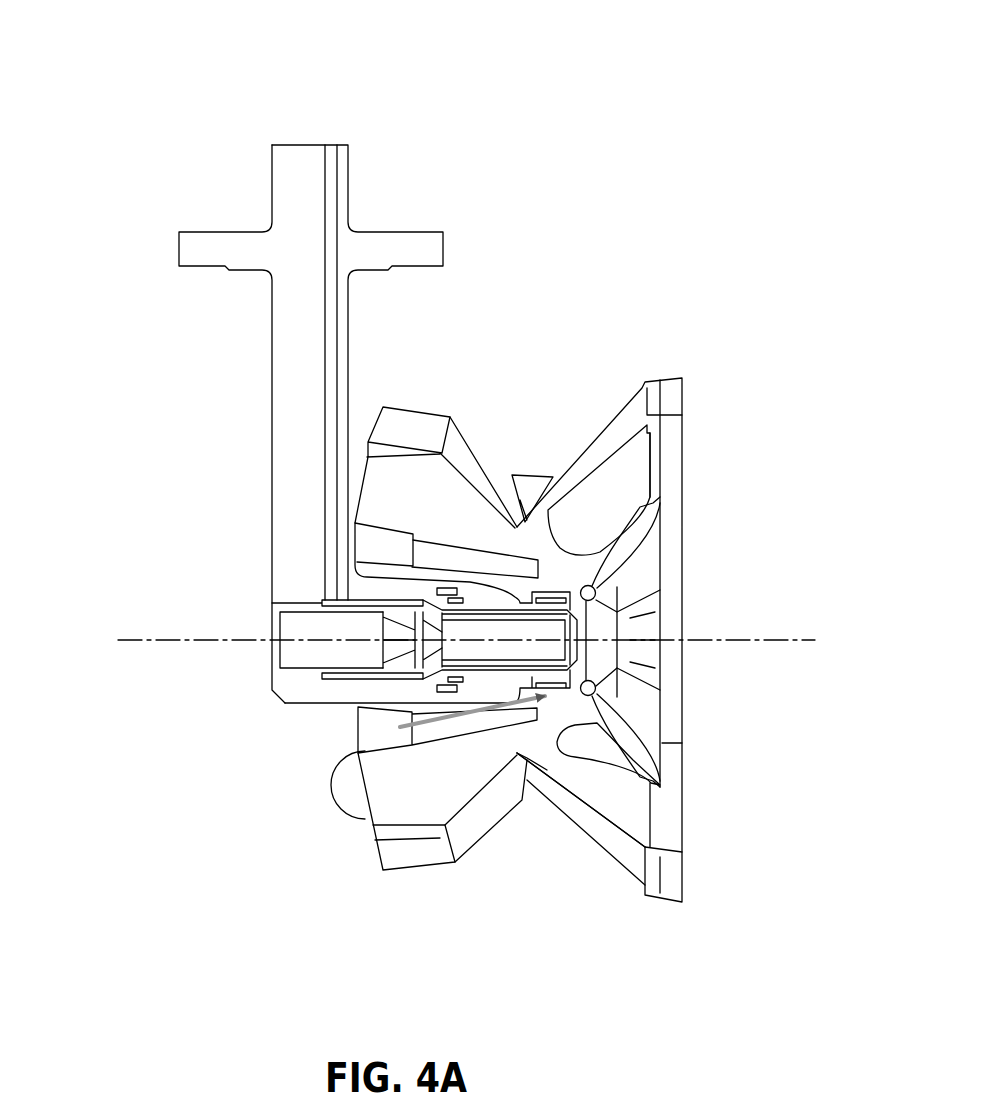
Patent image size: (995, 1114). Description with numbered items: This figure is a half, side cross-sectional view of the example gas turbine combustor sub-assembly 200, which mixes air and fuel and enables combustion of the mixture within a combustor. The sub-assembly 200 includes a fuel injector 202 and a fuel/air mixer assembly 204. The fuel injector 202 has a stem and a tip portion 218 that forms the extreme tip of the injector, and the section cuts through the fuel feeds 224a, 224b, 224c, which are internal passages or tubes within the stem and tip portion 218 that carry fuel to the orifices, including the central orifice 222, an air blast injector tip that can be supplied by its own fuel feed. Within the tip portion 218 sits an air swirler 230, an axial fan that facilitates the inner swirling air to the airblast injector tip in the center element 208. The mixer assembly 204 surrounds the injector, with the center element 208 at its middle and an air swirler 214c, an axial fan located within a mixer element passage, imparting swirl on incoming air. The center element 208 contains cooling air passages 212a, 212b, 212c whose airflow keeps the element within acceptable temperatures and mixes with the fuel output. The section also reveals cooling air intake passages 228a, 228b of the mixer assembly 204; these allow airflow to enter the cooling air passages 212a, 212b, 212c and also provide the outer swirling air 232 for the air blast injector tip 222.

The gas turbine combustor sub-assembly 200 is at (176, 48).
The fuel injector 202 is at (260, 377).
The fuel/air mixer assembly 204 is at (648, 355).
The center element 208 is at (662, 517).
The cooling air passage 212a is at (633, 625).
The cooling air passage 212b is at (632, 640).
The cooling air passage 212c is at (635, 658).
The air swirler 214c is at (351, 792).
The tip portion 218 is at (246, 710).
The central orifice 222 is at (612, 674).
The fuel feed 224a is at (452, 586).
The fuel feed 224b is at (331, 145).
The fuel feed 224c is at (462, 682).
The cooling air intake passage 228a is at (367, 545).
The cooling air intake passage 228b is at (375, 740).
The air swirler 230 is at (400, 633).
The outer swirling air 232 is at (460, 692).